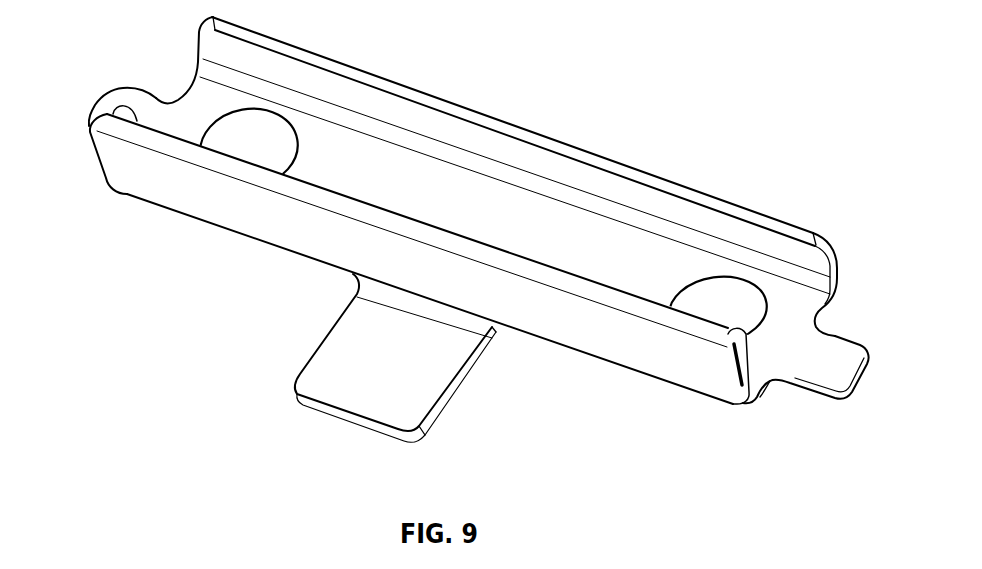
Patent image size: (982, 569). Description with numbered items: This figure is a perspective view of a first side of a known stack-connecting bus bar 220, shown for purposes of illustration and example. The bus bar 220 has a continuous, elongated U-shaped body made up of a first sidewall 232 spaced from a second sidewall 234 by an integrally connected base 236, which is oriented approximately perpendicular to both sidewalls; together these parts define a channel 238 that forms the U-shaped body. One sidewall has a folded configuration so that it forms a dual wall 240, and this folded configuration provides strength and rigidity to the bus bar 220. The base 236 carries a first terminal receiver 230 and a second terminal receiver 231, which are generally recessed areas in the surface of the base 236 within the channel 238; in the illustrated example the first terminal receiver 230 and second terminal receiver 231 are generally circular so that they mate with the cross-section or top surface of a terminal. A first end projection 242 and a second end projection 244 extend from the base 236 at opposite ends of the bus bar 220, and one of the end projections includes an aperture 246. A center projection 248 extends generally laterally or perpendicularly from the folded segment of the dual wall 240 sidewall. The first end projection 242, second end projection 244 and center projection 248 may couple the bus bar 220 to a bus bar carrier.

The stack-connecting bus bar 220 is at (797, 130).
The first terminal receiver 230 is at (270, 132).
The second terminal receiver 231 is at (728, 296).
The first sidewall 232 is at (266, 187).
The second sidewall 234 is at (538, 133).
The base 236 is at (388, 157).
The channel 238 is at (199, 99).
The dual wall 240 is at (745, 369).
The first end projection 242 is at (116, 98).
The second end projection 244 is at (842, 344).
The aperture 246 is at (120, 110).
The center projection 248 is at (318, 364).